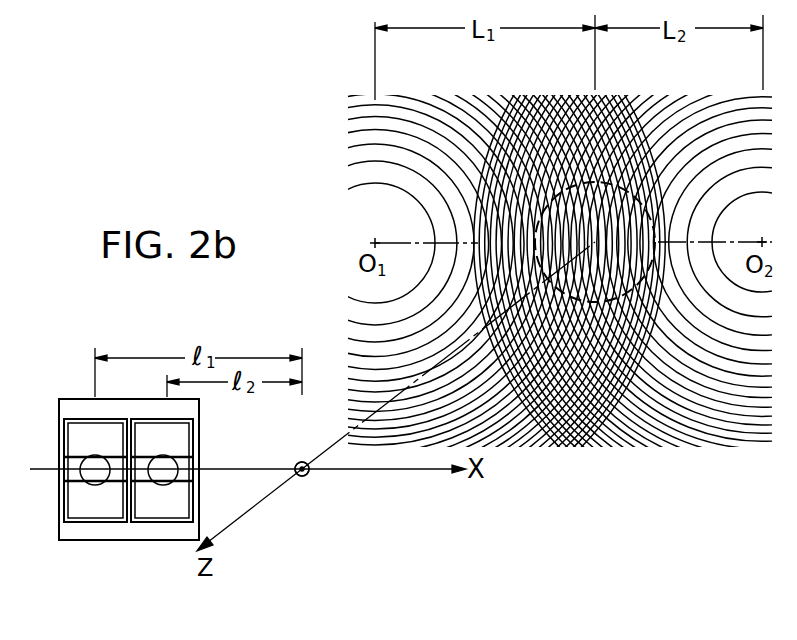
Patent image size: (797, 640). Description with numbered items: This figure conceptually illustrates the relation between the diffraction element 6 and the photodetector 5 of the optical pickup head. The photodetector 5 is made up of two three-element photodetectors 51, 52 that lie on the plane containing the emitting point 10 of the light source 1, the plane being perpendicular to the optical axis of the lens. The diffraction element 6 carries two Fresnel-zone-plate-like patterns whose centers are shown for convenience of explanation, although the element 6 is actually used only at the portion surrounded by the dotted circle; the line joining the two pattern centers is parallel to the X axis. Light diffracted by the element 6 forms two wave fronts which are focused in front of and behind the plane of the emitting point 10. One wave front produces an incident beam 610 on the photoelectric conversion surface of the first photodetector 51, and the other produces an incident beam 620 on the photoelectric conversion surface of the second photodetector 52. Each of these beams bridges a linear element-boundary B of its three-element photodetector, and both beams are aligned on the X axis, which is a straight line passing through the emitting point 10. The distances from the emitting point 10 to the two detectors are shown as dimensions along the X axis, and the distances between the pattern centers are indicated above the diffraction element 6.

The light source 1 is at (301, 462).
The emitting point 10 is at (307, 476).
The photodetector 5 is at (145, 494).
The first photodetector 51 is at (97, 523).
The second photodetector 52 is at (157, 523).
The incident beam 610 is at (80, 488).
The incident beam 620 is at (192, 462).
The diffraction element 6 is at (577, 97).
The linear element-boundaries B is at (64, 473).